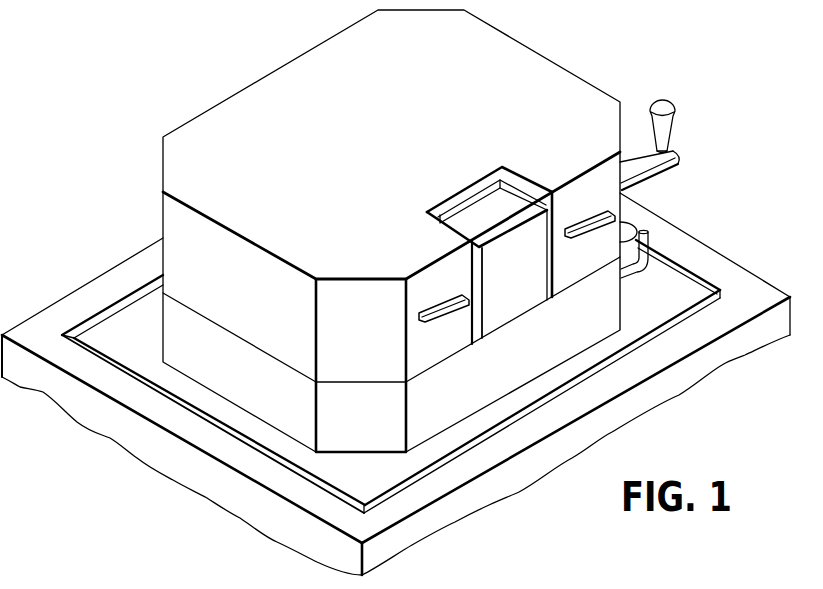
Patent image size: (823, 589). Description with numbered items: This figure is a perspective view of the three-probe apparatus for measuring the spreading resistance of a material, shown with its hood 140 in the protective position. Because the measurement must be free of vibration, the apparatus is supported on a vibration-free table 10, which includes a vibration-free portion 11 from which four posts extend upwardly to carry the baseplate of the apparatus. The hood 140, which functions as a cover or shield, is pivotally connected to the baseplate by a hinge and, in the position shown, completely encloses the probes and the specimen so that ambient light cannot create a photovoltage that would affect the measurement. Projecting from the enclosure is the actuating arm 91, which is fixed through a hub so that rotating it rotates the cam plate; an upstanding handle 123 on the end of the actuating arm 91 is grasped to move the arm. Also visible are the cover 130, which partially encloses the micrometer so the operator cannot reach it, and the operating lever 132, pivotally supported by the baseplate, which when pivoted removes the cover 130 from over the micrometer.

The vibration-free table 10 is at (396, 292).
The vibration-free portion 11 is at (668, 301).
The actuating arm 91 is at (659, 167).
The upstanding handle 123 is at (671, 101).
The cover 130 is at (512, 305).
The operating lever 132 is at (649, 243).
The hood 140 is at (547, 58).